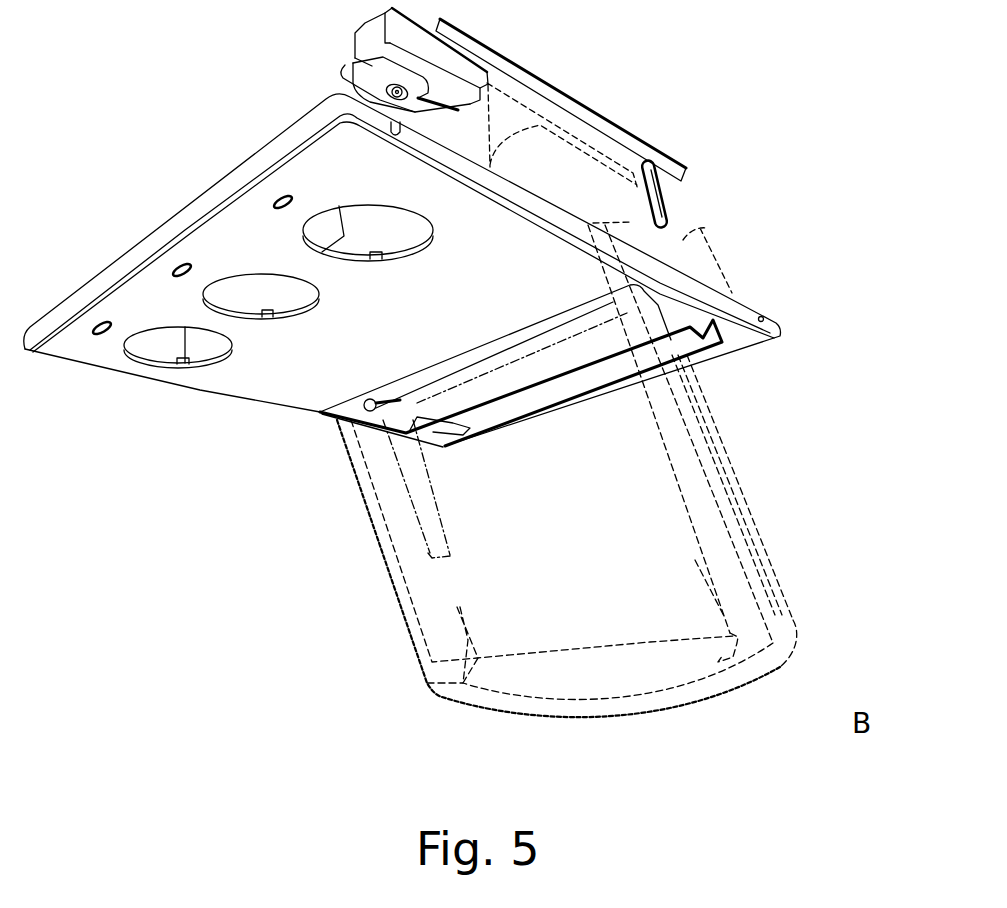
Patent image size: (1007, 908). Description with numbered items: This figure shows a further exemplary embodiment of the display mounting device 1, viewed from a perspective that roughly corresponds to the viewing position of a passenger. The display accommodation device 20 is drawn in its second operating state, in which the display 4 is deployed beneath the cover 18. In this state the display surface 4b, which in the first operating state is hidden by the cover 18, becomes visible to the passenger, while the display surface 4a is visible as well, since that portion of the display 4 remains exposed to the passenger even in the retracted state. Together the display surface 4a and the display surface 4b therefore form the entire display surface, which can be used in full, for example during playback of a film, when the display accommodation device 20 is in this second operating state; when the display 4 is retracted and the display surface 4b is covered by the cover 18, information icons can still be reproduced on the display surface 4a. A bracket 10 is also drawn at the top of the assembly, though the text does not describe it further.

The display mounting device 1 is at (268, 571).
The display 4 is at (584, 473).
The display surface 4a is at (687, 611).
The display surface 4b is at (665, 498).
The bracket 10 is at (707, 293).
The cover 18 is at (287, 363).
The display accommodation device 20 is at (705, 410).